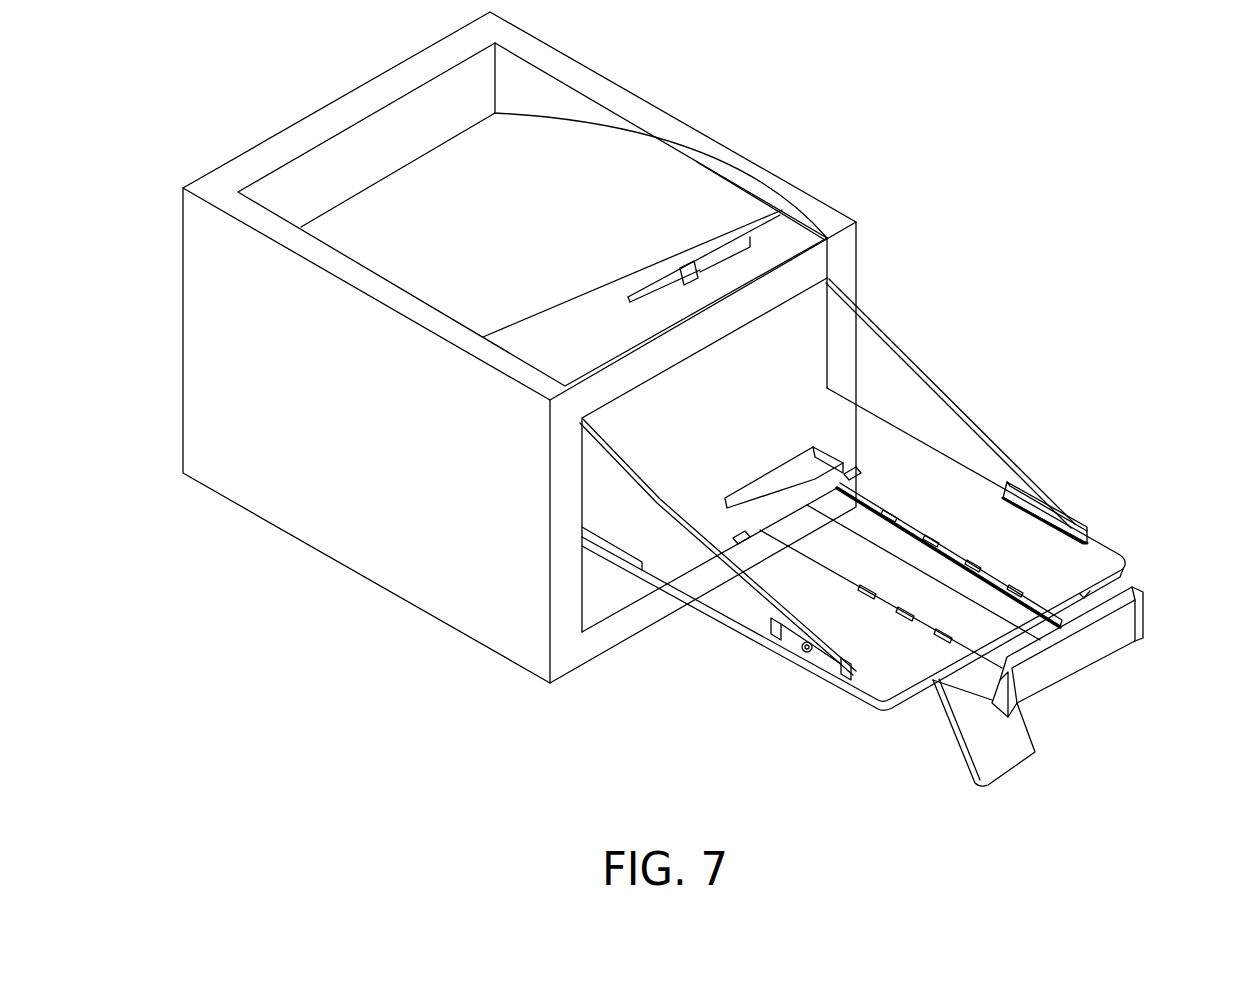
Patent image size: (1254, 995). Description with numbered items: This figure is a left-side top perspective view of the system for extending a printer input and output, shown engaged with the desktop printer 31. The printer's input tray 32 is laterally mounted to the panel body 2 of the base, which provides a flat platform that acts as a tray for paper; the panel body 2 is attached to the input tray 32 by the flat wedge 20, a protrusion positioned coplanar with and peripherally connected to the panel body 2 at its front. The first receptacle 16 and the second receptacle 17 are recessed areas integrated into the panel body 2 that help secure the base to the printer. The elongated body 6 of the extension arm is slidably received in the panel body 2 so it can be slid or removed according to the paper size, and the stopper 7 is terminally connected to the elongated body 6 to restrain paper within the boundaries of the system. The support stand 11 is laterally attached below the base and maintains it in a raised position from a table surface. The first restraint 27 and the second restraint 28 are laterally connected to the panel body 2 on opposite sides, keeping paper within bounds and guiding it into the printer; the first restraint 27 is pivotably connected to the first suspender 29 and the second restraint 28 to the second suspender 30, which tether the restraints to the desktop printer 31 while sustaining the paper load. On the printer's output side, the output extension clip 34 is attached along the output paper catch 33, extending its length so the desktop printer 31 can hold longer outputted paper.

The panel body 2 is at (960, 480).
The elongated body 6 is at (918, 598).
The stopper 7 is at (1168, 610).
The support stand 11 is at (977, 757).
The first receptacle 16 is at (737, 533).
The second receptacle 17 is at (852, 470).
The flat wedge 20 is at (778, 482).
The first restraint 27 is at (817, 660).
The second restraint 28 is at (1073, 517).
The first suspender 29 is at (743, 580).
The second suspender 30 is at (933, 393).
The desktop printer 31 is at (192, 268).
The input tray 32 is at (590, 492).
The output paper catch 33 is at (650, 288).
The output extension clip 34 is at (690, 266).